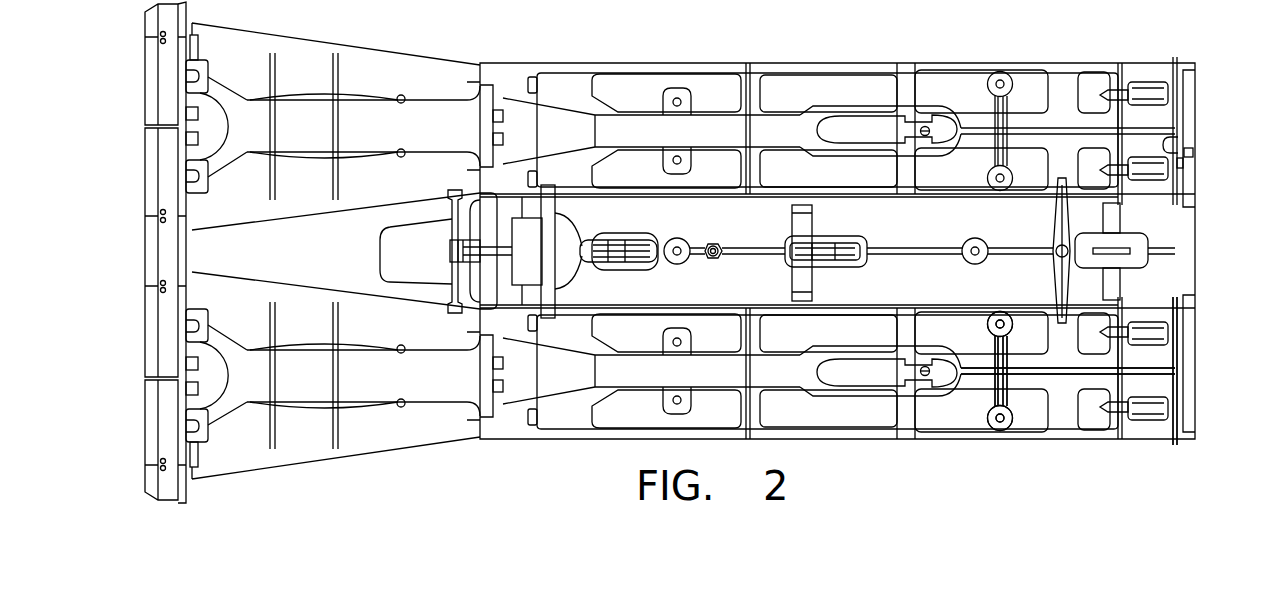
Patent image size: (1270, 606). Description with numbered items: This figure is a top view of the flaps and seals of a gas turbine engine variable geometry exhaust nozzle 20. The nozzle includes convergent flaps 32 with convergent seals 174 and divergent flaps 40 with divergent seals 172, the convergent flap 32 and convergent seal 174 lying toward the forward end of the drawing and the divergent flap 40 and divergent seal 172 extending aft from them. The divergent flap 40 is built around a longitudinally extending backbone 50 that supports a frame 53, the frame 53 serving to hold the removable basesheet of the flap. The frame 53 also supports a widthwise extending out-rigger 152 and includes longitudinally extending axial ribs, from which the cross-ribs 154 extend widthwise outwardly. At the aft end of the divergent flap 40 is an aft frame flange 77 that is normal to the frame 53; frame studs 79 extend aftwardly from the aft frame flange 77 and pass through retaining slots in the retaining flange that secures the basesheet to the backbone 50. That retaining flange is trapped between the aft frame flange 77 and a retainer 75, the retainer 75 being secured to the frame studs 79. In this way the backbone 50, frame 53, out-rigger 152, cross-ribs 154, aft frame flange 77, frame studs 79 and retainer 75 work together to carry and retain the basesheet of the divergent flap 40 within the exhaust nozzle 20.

The variable geometry exhaust nozzle 20 is at (1034, 53).
The convergent flap 32 is at (287, 50).
The divergent flap 40 is at (933, 62).
The backbone 50 is at (1132, 371).
The frame 53 is at (903, 72).
The retainer 75 is at (1181, 162).
The aft frame flange 77 is at (1165, 139).
The frame stud 79 is at (1192, 153).
The out-rigger 152 is at (1017, 402).
The cross-rib 154 is at (908, 410).
The divergent seal 172 is at (987, 227).
The convergent seal 174 is at (393, 253).